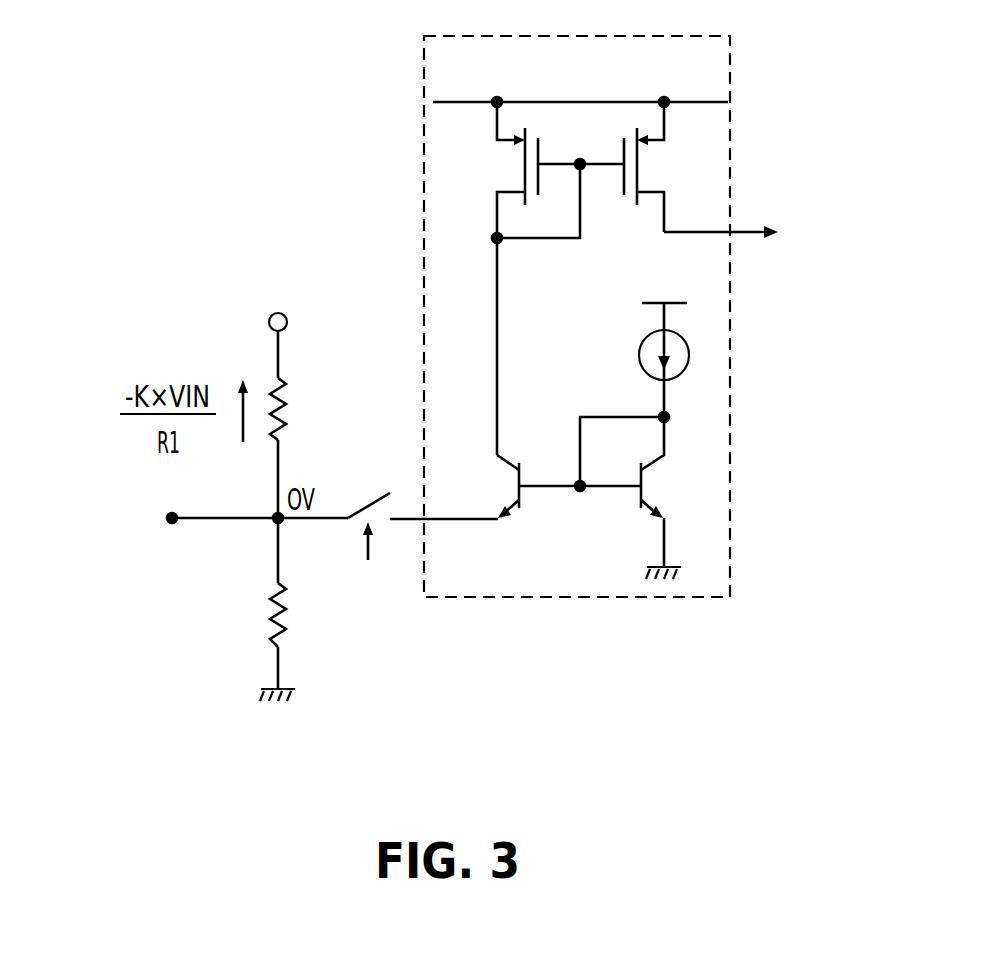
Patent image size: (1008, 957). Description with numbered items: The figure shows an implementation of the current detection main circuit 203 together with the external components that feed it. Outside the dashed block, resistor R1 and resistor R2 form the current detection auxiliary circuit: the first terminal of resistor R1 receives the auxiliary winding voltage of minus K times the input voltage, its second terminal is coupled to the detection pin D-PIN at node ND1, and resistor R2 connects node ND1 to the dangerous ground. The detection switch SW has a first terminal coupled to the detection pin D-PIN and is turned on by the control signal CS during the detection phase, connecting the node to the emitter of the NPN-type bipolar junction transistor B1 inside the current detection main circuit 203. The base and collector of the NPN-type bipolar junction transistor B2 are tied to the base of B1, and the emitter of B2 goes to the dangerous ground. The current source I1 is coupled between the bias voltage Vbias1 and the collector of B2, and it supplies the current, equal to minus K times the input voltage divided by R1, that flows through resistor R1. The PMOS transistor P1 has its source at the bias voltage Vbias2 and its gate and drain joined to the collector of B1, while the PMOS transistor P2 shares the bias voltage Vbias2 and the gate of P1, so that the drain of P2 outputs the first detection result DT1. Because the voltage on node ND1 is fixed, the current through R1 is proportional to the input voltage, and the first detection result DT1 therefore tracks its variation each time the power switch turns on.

The current detection main circuit 203 is at (520, 36).
The PMOS transistor P1 is at (529, 170).
The PMOS transistor P2 is at (634, 167).
The NPN-type bipolar junction transistor B1 is at (526, 486).
The NPN-type bipolar junction transistor B2 is at (634, 492).
The current source I1 is at (679, 360).
The resistor R1 is at (295, 409).
The resistor R2 is at (296, 615).
The detection switch SW is at (423, 487).
The control signal CS is at (367, 563).
The node ND1 is at (270, 519).
The detection pin D-PIN is at (166, 519).
The first detection result DT1 is at (743, 234).
The bias voltage Vbias1 is at (663, 282).
The bias voltage Vbias2 is at (580, 83).